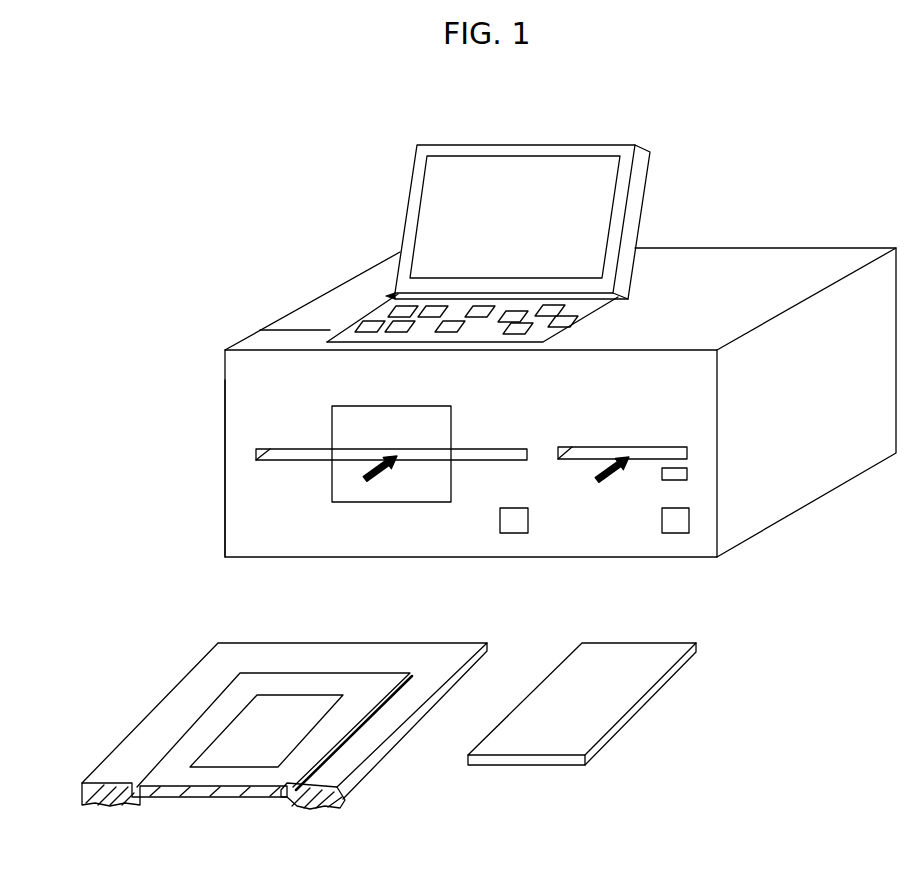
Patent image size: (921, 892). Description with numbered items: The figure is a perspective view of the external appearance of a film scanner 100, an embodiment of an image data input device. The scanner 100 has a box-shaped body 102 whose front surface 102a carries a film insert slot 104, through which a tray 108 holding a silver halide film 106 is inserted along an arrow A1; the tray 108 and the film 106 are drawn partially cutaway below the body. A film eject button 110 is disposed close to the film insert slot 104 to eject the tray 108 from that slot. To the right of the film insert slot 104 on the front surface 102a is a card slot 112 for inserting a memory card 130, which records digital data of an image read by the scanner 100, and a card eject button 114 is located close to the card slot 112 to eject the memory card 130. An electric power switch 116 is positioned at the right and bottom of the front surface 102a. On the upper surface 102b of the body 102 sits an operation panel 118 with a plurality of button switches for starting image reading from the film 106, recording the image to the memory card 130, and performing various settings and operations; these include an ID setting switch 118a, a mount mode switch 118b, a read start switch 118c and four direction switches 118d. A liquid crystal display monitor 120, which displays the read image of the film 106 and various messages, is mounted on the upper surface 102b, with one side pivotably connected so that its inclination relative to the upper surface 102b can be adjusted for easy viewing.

The film scanner 100 is at (300, 186).
The body 102 is at (760, 247).
The front surface 102a is at (245, 386).
The upper surface 102b is at (290, 333).
The film insert slot 104 is at (290, 456).
The arrow A1 is at (385, 472).
The silver halide film 106 is at (230, 778).
The tray 108 is at (135, 746).
The film eject button 110 is at (513, 520).
The card slot 112 is at (645, 452).
The card eject button 114 is at (687, 474).
The electric power switch 116 is at (677, 520).
The operation panel 118 is at (482, 247).
The ID setting switch 118a is at (397, 305).
The mount mode switch 118b is at (373, 330).
The read start switch 118c is at (433, 306).
The direction switches 118d is at (518, 329).
The liquid crystal display (LCD) monitor 120 is at (512, 175).
The memory card 130 is at (625, 690).